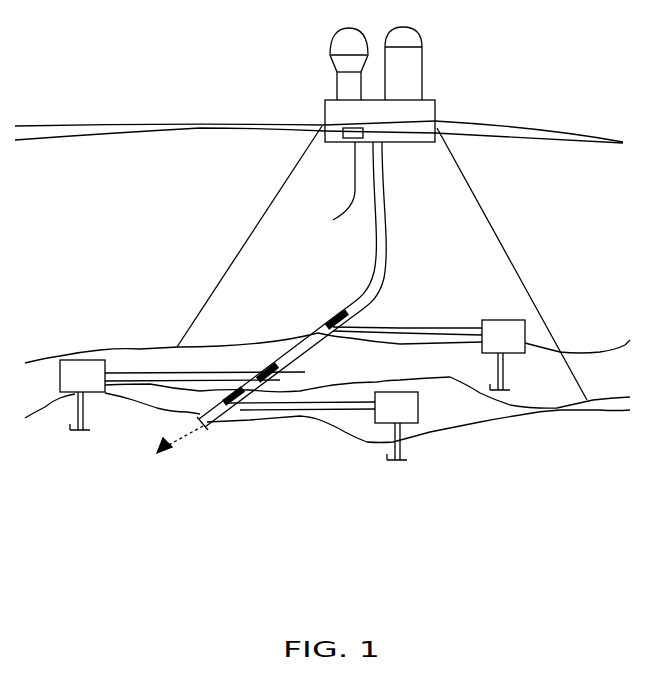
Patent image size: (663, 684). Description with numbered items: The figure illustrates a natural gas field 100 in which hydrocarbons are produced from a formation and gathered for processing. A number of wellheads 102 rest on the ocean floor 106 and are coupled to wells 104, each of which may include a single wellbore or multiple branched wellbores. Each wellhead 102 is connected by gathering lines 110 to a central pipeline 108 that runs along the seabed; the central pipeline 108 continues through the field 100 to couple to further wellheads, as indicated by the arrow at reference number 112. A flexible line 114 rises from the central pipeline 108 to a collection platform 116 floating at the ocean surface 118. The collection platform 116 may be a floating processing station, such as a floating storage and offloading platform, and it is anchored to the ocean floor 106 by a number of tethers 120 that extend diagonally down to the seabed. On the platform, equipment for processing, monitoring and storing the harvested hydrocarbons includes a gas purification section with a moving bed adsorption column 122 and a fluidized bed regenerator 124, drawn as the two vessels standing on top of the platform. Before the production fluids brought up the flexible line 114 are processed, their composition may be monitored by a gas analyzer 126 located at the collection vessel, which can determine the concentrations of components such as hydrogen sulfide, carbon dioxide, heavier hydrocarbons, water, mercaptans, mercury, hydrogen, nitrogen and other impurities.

The natural gas field 100 is at (343, 615).
The wellhead 102 is at (82, 360).
The well 104 is at (85, 412).
The ocean floor 106 is at (600, 398).
The central pipeline 108 is at (265, 345).
The gathering line 110 is at (160, 373).
The continuation of central pipeline 112 is at (173, 436).
The flexible line 114 is at (390, 243).
The collection platform 116 is at (435, 106).
The ocean surface 118 is at (182, 125).
The tether 120 is at (283, 185).
The moving bed adsorption column 122 is at (423, 52).
The fluidized bed regenerator 124 is at (340, 36).
The gas analyzer 126 is at (326, 186).